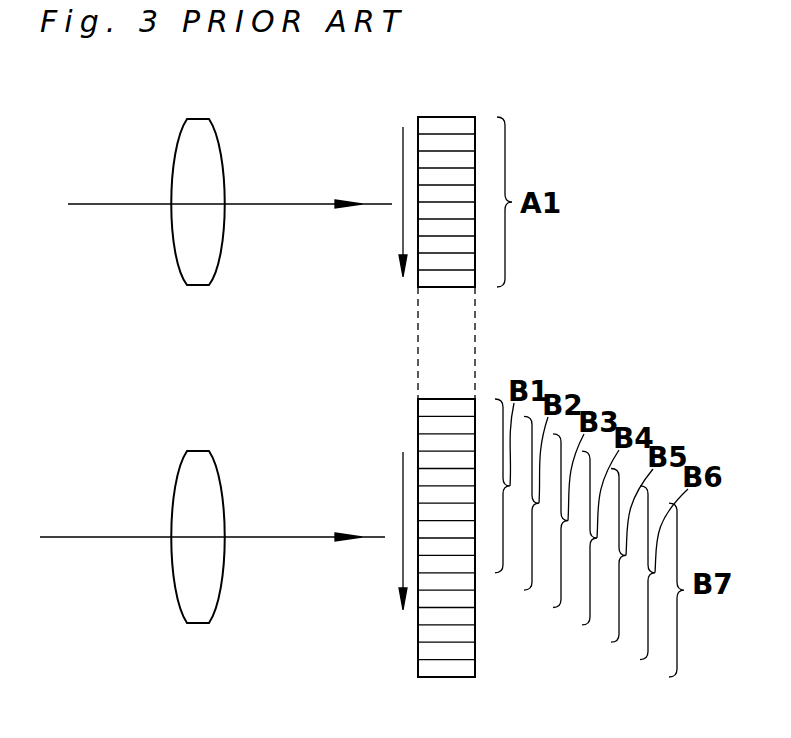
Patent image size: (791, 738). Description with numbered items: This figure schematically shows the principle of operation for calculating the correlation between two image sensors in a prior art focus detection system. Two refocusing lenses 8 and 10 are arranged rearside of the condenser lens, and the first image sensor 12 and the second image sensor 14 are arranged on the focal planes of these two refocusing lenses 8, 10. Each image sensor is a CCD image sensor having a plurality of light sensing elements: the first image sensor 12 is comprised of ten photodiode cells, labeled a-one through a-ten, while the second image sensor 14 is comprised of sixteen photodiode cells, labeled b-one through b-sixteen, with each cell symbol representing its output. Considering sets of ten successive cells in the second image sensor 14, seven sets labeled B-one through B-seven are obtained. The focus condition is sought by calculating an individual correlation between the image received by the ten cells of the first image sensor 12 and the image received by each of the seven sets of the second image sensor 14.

The refocusing lens 8 is at (197, 118).
The refocusing lens 10 is at (192, 623).
The first image sensor 12 is at (459, 117).
The second image sensor 14 is at (452, 398).